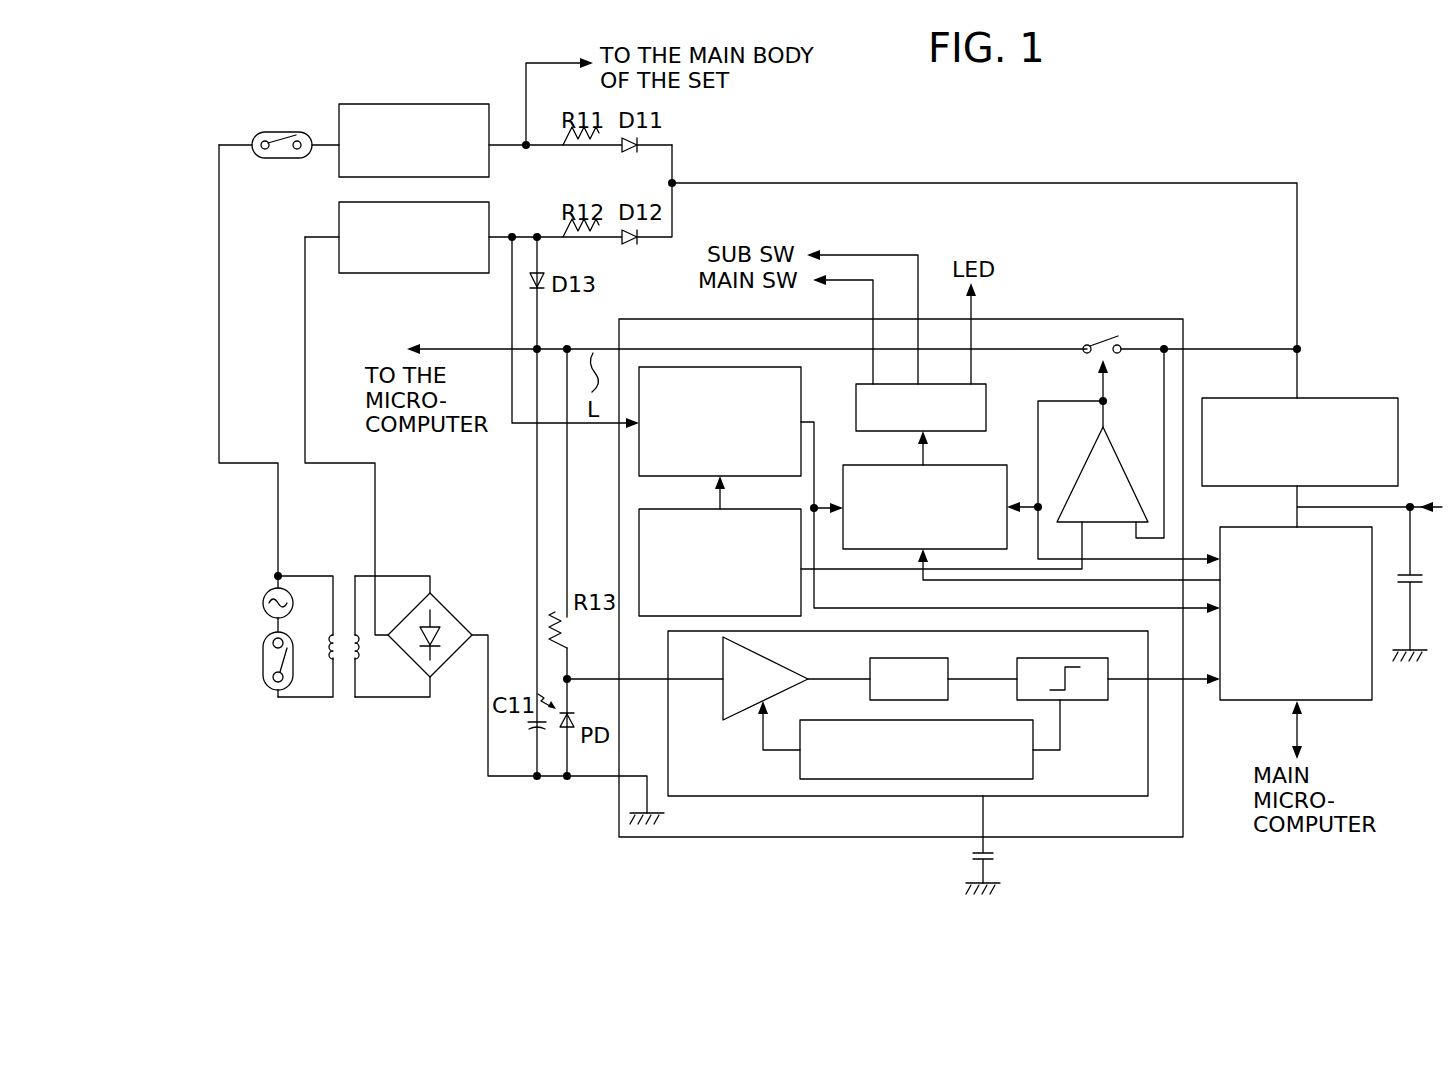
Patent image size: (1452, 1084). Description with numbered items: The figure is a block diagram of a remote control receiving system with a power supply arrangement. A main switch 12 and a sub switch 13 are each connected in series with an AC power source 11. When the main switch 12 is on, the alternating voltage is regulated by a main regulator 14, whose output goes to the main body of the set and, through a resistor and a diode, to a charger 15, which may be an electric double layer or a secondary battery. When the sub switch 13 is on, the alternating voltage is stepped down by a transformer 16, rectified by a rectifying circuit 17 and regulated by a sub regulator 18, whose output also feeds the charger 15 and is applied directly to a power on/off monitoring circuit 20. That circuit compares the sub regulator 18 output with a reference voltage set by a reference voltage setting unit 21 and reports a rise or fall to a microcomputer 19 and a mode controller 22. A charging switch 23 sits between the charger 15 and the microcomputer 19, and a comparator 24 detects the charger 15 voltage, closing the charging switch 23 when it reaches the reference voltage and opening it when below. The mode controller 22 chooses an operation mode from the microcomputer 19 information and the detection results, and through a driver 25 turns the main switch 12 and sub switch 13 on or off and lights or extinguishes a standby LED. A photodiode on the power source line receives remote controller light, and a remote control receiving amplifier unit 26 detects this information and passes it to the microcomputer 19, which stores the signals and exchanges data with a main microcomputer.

The AC power source 11 is at (262, 604).
The main switch 12 is at (280, 132).
The sub switch 13 is at (262, 666).
The main regulator 14 is at (462, 104).
The charger 15 is at (1373, 397).
The transformer 16 is at (343, 570).
The rectifying circuit 17 is at (449, 606).
The sub regulator 18 is at (458, 274).
The microcomputer 19 is at (1342, 702).
The power on/off monitoring circuit 20 is at (802, 394).
The reference voltage setting unit 21 is at (756, 488).
The mode controller 22 is at (987, 465).
The charging switch 23 is at (1092, 358).
The comparator 24 is at (1128, 463).
The driver 25 is at (987, 407).
The remote control receiving amplifier unit 26 is at (1078, 797).